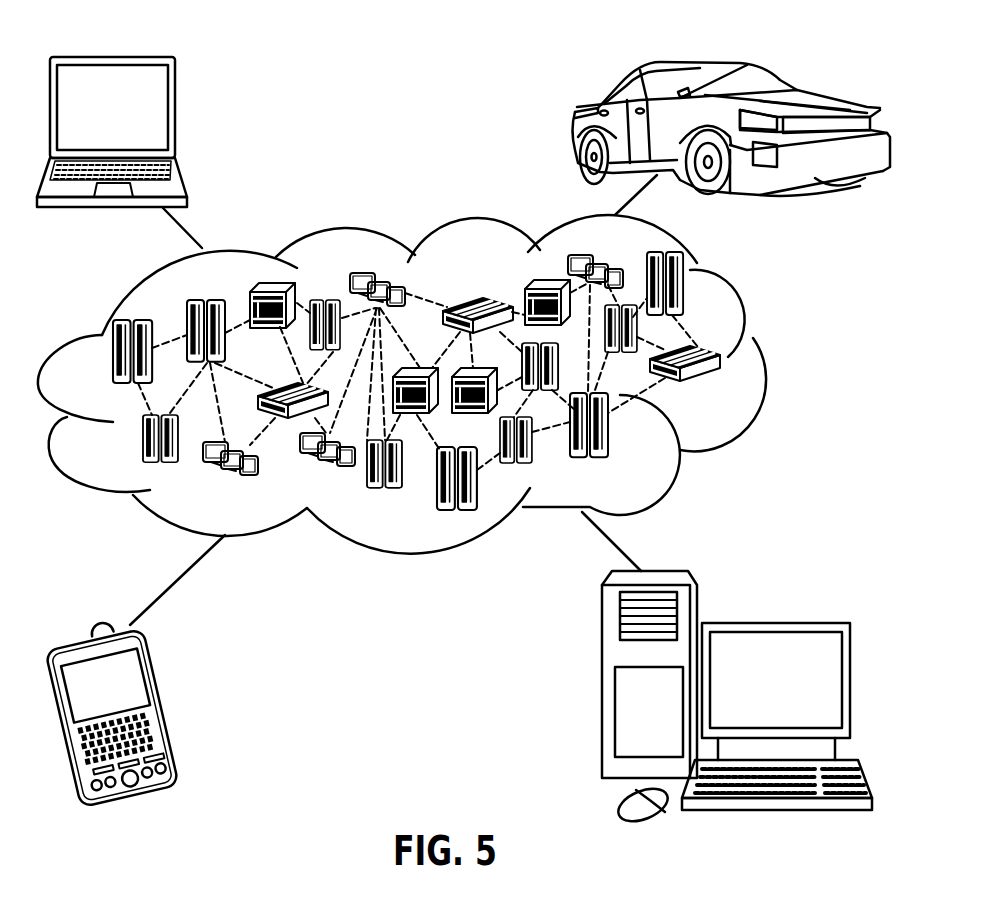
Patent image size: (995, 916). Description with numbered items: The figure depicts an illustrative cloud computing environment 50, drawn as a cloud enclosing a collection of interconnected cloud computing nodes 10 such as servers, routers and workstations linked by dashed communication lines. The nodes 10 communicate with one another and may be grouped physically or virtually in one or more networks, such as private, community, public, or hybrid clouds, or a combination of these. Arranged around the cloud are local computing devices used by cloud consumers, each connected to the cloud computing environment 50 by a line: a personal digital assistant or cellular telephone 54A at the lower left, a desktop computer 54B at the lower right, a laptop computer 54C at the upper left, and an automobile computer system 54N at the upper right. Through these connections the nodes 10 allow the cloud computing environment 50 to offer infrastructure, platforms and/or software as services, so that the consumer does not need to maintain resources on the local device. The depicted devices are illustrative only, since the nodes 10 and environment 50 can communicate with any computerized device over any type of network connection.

The cloud computing nodes 10 is at (724, 390).
The cloud computing environment 50 is at (432, 384).
The personal digital assistant (PDA) or cellular telephone 54A is at (167, 707).
The desktop computer 54B is at (772, 623).
The laptop computer 54C is at (175, 112).
The automobile computer system 54N is at (575, 127).